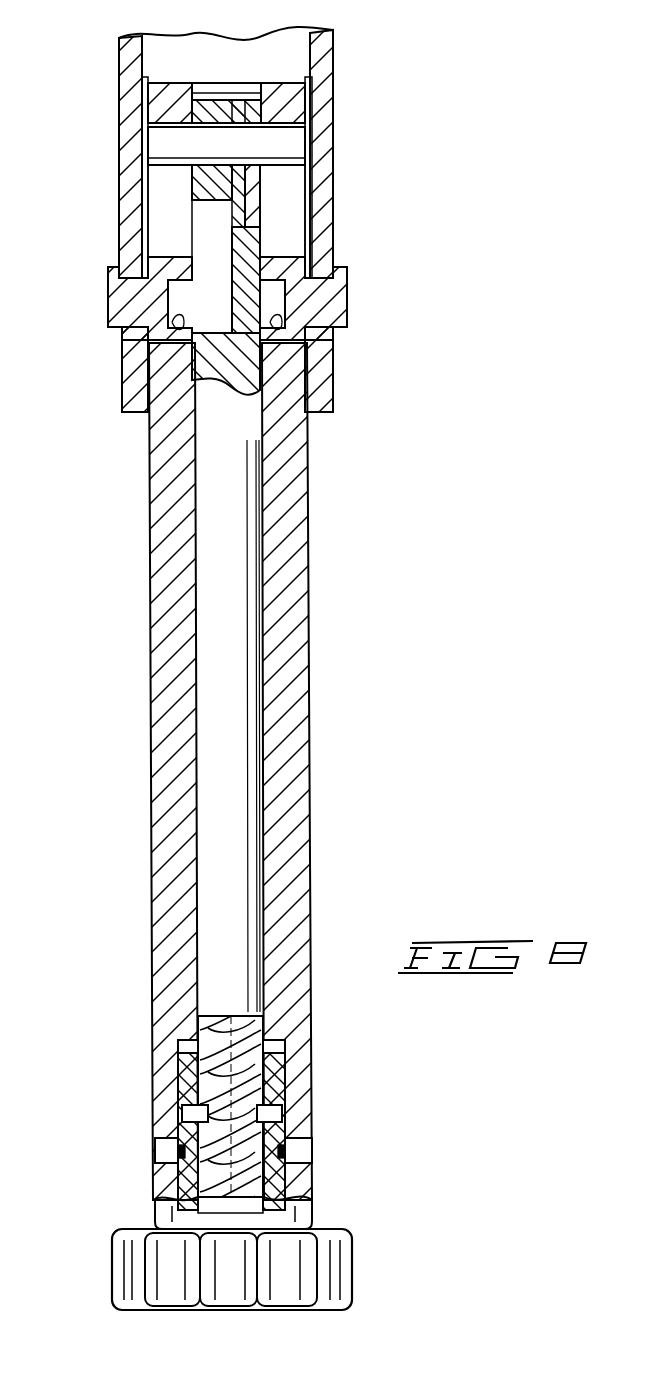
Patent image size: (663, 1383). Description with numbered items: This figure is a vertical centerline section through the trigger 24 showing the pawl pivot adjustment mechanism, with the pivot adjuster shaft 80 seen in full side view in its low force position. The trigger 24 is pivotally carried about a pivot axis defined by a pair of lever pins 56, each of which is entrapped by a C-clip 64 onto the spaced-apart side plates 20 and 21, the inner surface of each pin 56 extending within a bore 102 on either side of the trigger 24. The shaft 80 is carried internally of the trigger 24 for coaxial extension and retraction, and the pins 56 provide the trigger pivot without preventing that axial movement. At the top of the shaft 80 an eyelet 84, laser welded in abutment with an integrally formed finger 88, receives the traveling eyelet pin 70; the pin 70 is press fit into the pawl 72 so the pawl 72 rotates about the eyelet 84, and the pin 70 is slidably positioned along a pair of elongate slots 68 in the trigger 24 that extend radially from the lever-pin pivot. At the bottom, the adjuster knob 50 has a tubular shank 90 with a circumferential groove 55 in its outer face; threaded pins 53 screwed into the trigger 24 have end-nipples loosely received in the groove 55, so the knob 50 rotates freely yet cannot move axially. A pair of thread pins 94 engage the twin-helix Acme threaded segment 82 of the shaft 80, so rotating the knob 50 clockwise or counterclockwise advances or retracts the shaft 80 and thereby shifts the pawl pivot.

The side plate 20 is at (119, 62).
The side plate 21 is at (333, 64).
The trigger 24 is at (309, 613).
The adjuster knob 50 is at (352, 1268).
The threaded pin 53 is at (155, 1150).
The circumferential groove 55 is at (178, 1178).
The lever pin 56 is at (126, 300).
The C-clip 64 is at (145, 243).
The elongate slot 68 is at (172, 206).
The traveling eyelet pin 70 is at (294, 145).
The pawl 72 is at (205, 112).
The pivot adjuster shaft 80 is at (218, 741).
The threaded segment 82 is at (198, 1026).
The eyelet 84 is at (237, 100).
The finger 88 is at (234, 238).
The tubular shank 90 is at (190, 1070).
The thread pin 94 is at (194, 1115).
The bore 102 is at (265, 322).